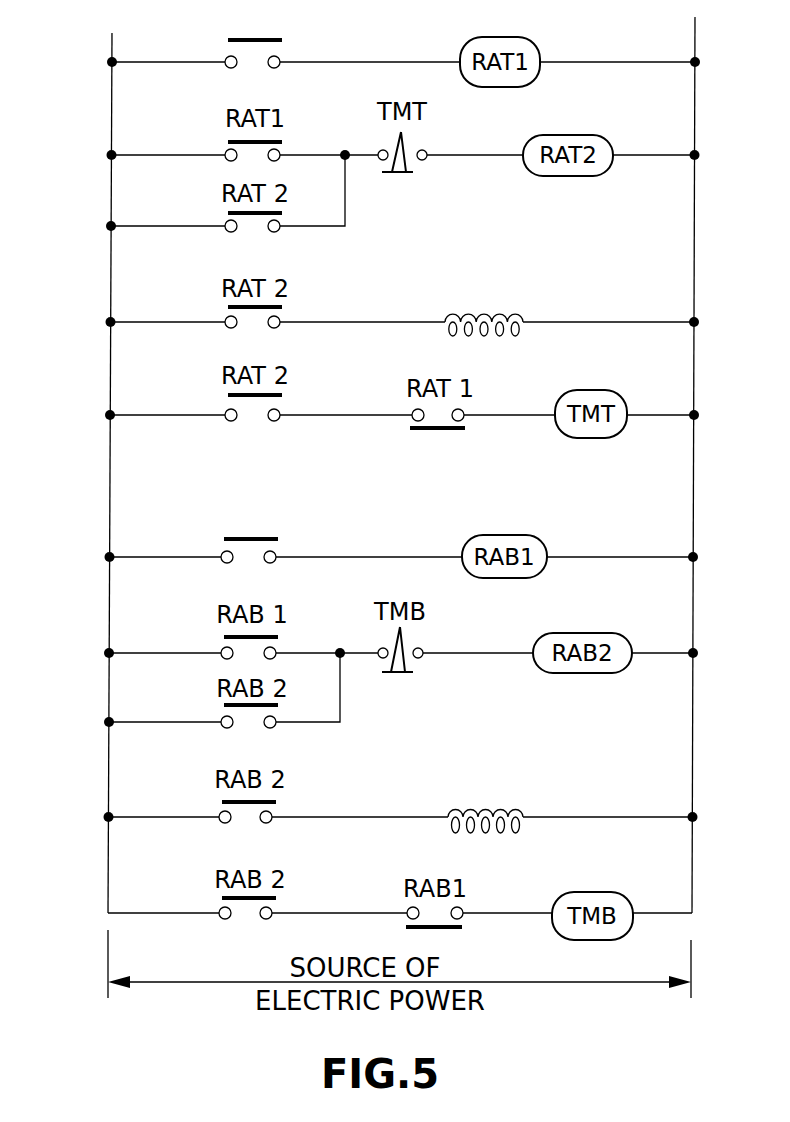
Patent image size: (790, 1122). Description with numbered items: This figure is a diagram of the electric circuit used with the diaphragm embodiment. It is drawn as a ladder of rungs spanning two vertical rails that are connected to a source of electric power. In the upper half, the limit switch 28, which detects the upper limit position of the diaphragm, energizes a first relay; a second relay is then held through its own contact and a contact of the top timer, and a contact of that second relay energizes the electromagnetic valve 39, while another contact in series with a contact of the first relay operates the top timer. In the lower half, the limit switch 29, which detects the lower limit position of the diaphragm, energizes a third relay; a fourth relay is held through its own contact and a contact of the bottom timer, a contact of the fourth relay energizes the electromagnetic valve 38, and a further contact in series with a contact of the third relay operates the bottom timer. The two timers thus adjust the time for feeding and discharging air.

The limit switch 28 is at (252, 38).
The limit switch 29 is at (250, 538).
The electromagnetic valve 38 is at (478, 808).
The electromagnetic valve 39 is at (498, 311).